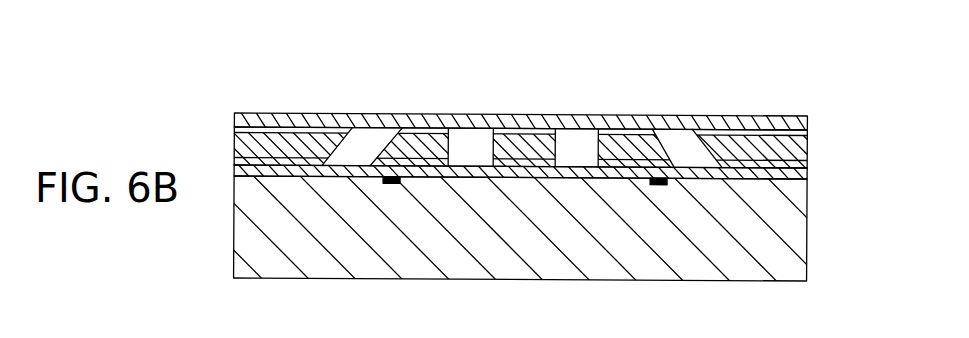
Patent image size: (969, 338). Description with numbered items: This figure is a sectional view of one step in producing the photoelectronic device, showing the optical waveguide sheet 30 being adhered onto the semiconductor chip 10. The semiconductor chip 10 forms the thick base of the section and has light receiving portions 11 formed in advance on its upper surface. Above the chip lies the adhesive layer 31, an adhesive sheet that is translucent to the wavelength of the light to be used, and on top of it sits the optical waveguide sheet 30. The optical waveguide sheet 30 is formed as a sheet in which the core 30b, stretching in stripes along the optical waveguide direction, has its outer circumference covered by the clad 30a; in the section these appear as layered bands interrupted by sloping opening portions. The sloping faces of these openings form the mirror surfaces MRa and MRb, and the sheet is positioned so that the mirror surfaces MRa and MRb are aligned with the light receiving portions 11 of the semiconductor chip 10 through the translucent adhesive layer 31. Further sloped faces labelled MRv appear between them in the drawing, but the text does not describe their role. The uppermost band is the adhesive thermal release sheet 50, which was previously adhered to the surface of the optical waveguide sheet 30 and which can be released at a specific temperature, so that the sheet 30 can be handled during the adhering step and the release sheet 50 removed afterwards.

The semiconductor chip 10 is at (515, 229).
The light receiving portions 11 is at (534, 253).
The optical waveguide sheet 30 is at (502, 92).
The clad 30a is at (529, 101).
The core 30b is at (813, 63).
The adhesive layer 31 is at (551, 171).
The adhesive thermal release sheet 50 is at (552, 113).
The mirror surface MRa is at (363, 106).
The magnetoresistive element v MRv is at (531, 106).
The mirror surface MRb is at (679, 107).